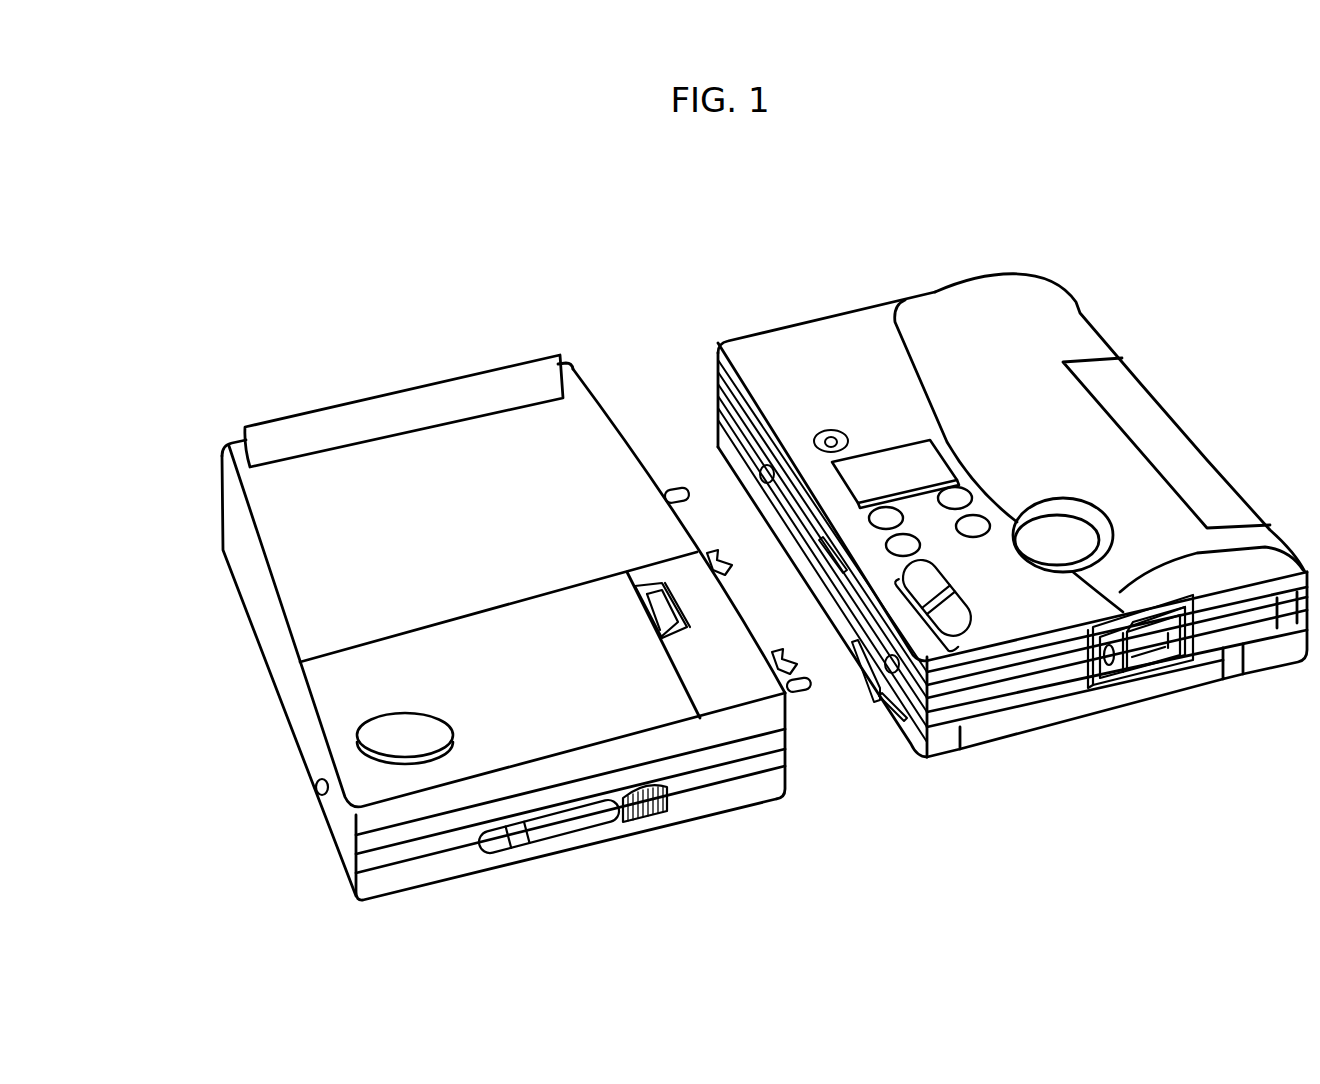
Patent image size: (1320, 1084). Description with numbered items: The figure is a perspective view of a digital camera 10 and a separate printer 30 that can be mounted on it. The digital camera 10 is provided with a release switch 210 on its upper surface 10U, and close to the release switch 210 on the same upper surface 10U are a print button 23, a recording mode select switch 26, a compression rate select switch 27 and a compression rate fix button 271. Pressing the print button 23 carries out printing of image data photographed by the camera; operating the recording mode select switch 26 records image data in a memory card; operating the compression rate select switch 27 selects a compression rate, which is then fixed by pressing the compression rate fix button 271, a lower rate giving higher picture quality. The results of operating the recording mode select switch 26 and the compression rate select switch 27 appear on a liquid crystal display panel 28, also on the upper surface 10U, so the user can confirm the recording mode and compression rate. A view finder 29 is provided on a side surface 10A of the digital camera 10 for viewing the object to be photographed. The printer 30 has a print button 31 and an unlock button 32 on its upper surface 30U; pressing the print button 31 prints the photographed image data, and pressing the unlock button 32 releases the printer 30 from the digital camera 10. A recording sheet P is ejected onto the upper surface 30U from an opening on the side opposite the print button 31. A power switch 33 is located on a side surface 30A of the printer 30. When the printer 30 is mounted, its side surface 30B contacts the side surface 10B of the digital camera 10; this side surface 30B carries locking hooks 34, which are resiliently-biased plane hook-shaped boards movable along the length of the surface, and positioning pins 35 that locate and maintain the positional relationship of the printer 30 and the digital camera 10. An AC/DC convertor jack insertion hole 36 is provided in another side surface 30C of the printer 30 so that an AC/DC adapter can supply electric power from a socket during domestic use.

The digital camera 10 is at (985, 232).
The upper surface 10U is at (877, 343).
The side surface 10B is at (735, 396).
The side surface 10A is at (1260, 628).
The liquid crystal display panel 28 is at (922, 465).
The compression rate select switch 27 is at (905, 546).
The compression rate fix button 271 is at (885, 517).
The print button 23 is at (955, 498).
The recording mode select switch 26 is at (973, 526).
The release switch 210 is at (1058, 538).
The view finder 29 is at (1150, 640).
The printer 30 is at (324, 370).
The recording sheet P is at (517, 383).
The upper surface 30U is at (330, 508).
The side surface 30C is at (258, 601).
The side surface 30A is at (417, 865).
The side surface 30B is at (636, 440).
The print button 31 is at (400, 737).
The unlock button 32 is at (657, 597).
The power switch 33 is at (543, 830).
The locking hooks 34 is at (722, 552).
The positioning pins 35 is at (680, 492).
The AC/DC convertor jack insertion hole 36 is at (314, 787).